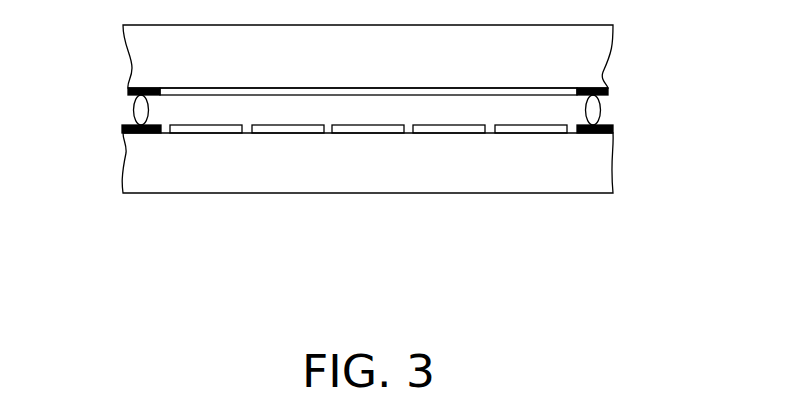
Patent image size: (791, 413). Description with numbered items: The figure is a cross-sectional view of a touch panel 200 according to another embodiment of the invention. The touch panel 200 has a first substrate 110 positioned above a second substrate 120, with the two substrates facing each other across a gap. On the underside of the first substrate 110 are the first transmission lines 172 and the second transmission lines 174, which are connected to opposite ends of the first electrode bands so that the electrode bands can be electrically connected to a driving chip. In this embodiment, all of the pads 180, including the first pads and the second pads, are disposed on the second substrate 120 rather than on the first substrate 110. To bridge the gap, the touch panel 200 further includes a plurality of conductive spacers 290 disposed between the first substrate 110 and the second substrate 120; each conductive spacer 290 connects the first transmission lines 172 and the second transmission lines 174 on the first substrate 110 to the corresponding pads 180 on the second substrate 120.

The first substrate 110 is at (585, 57).
The second substrate 120 is at (583, 167).
The first transmission lines 172 is at (128, 92).
The second transmission lines 174 is at (608, 91).
The pads 180 is at (142, 133).
The touch panel 200 is at (658, 257).
The conductive spacers 290 is at (141, 110).